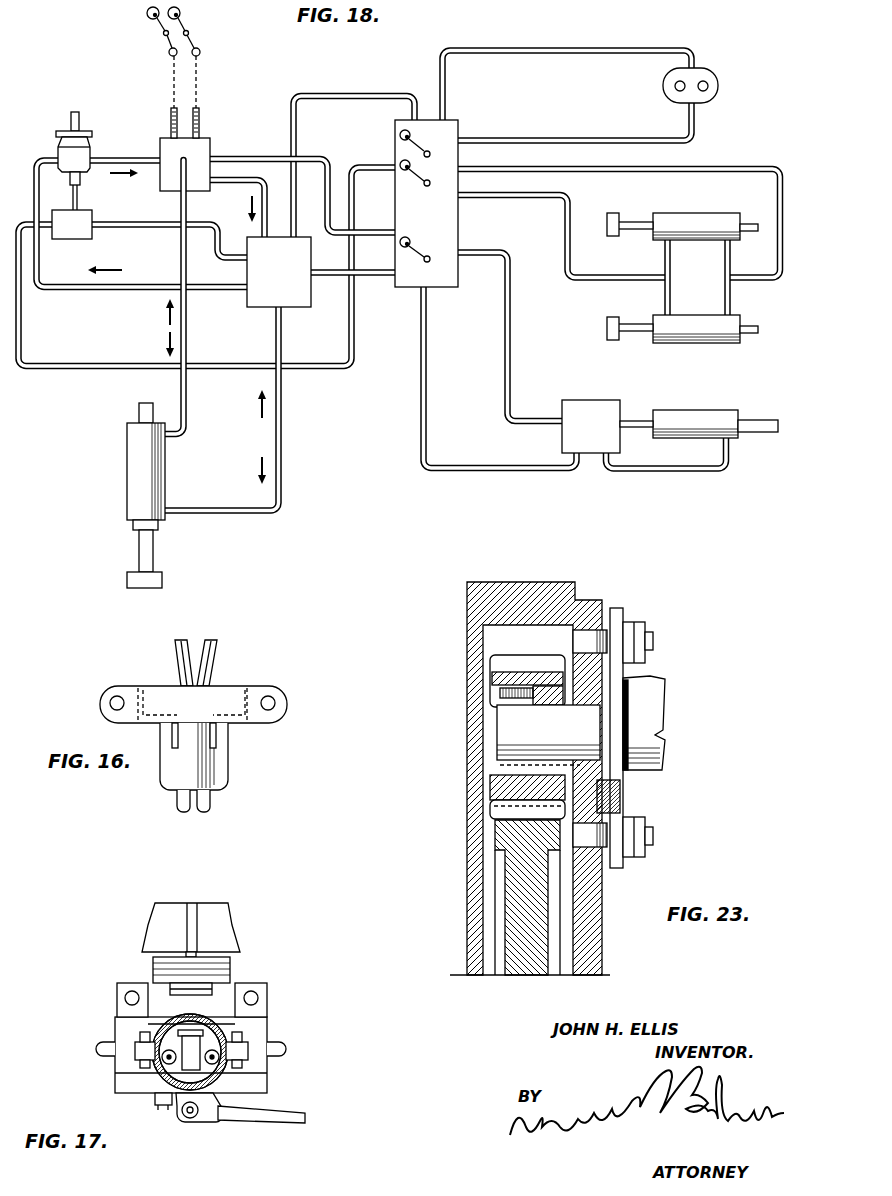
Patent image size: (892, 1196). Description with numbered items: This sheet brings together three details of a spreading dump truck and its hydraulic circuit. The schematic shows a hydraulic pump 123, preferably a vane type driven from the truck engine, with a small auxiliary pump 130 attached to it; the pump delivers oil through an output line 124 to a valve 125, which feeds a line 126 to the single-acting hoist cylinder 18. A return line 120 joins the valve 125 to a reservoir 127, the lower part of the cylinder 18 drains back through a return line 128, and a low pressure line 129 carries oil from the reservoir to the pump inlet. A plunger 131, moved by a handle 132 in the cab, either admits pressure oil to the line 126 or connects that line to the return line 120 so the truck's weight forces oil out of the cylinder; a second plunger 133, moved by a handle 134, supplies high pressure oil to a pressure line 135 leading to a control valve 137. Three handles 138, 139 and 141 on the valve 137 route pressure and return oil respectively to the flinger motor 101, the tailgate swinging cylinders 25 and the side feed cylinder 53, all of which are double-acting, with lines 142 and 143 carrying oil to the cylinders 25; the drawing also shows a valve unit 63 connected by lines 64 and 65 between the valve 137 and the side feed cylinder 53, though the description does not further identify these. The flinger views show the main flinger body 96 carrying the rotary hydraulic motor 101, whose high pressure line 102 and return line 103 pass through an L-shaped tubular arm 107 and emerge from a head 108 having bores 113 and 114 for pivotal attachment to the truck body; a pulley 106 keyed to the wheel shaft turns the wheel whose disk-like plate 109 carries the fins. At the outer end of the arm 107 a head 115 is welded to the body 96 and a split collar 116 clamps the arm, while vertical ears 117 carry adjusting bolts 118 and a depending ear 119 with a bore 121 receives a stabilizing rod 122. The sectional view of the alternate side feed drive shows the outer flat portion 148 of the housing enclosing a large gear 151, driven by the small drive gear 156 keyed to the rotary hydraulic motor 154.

In FIG. 18, the single-acting hoist cylinder 18 is at (127, 482).
In FIG. 18, the tailgate swinging cylinders 25 is at (690, 212).
In FIG. 18, the side feed cylinder 53 is at (690, 410).
In FIG. 18, the control valve 63 is at (573, 400).
In FIG. 18, the conduit 64 is at (514, 373).
In FIG. 18, the conduit 65 is at (472, 464).
In FIG. 17, the main flinger body 96 is at (115, 1065).
In FIG. 18, the rotary hydraulic motor 101 is at (719, 86).
In FIG. 18, the high pressure line 102 is at (603, 137).
In FIG. 16, the high pressure line 102 is at (214, 645).
In FIG. 17, the high pressure line 102 is at (100, 1046).
In FIG. 18, the return line 103 is at (603, 48).
In FIG. 16, the return line 103 is at (176, 645).
In FIG. 17, the return line 103 is at (285, 1047).
In FIG. 17, the pulley 106 is at (230, 975).
In FIG. 16, the L-shaped tubular arm 107 is at (228, 773).
In FIG. 17, the L-shaped tubular arm 107 is at (168, 1074).
In FIG. 16, the head 108 is at (233, 686).
In FIG. 17, the disk-like horizontal plate 109 is at (240, 947).
In FIG. 16, the bore 113 is at (117, 696).
In FIG. 16, the bore 114 is at (271, 697).
In FIG. 17, the head 115 is at (278, 1068).
In FIG. 17, the split collar 116 is at (225, 1078).
In FIG. 17, the vertical ears 117 is at (117, 990).
In FIG. 17, the adjusting bolts 118 is at (125, 1000).
In FIG. 17, the vertically depending ear 119 is at (208, 1118).
In FIG. 18, the return line 120 is at (235, 184).
In FIG. 17, the bore 121 is at (183, 1122).
In FIG. 17, the stabilizing rod 122 is at (225, 1122).
In FIG. 18, the hydraulic pump 123 is at (60, 152).
In FIG. 18, the output line 124 is at (119, 157).
In FIG. 18, the valve 125 is at (210, 143).
In FIG. 18, the line 126 is at (182, 250).
In FIG. 18, the reservoir 127 is at (257, 308).
In FIG. 18, the return line 128 is at (209, 510).
In FIG. 18, the low pressure line 129 is at (40, 268).
In FIG. 18, the small auxiliary pump 130 is at (93, 216).
In FIG. 18, the plunger 131 is at (170, 117).
In FIG. 18, the handle 132 is at (147, 13).
In FIG. 18, the plunger 133 is at (200, 117).
In FIG. 18, the handle 134 is at (180, 13).
In FIG. 18, the pressure line 135 is at (328, 156).
In FIG. 18, the control valve 137 is at (418, 220).
In FIG. 18, the handle 138 is at (426, 142).
In FIG. 18, the handle 139 is at (427, 173).
In FIG. 18, the handle 141 is at (426, 247).
In FIG. 18, the line 142 is at (636, 173).
In FIG. 18, the line 143 is at (622, 267).
In FIG. 23, the outer flat portion 148 is at (468, 862).
In FIG. 23, the large gear 151 is at (528, 968).
In FIG. 23, the rotary hydraulic motor 154 is at (648, 680).
In FIG. 23, the small drive gear 156 is at (490, 790).